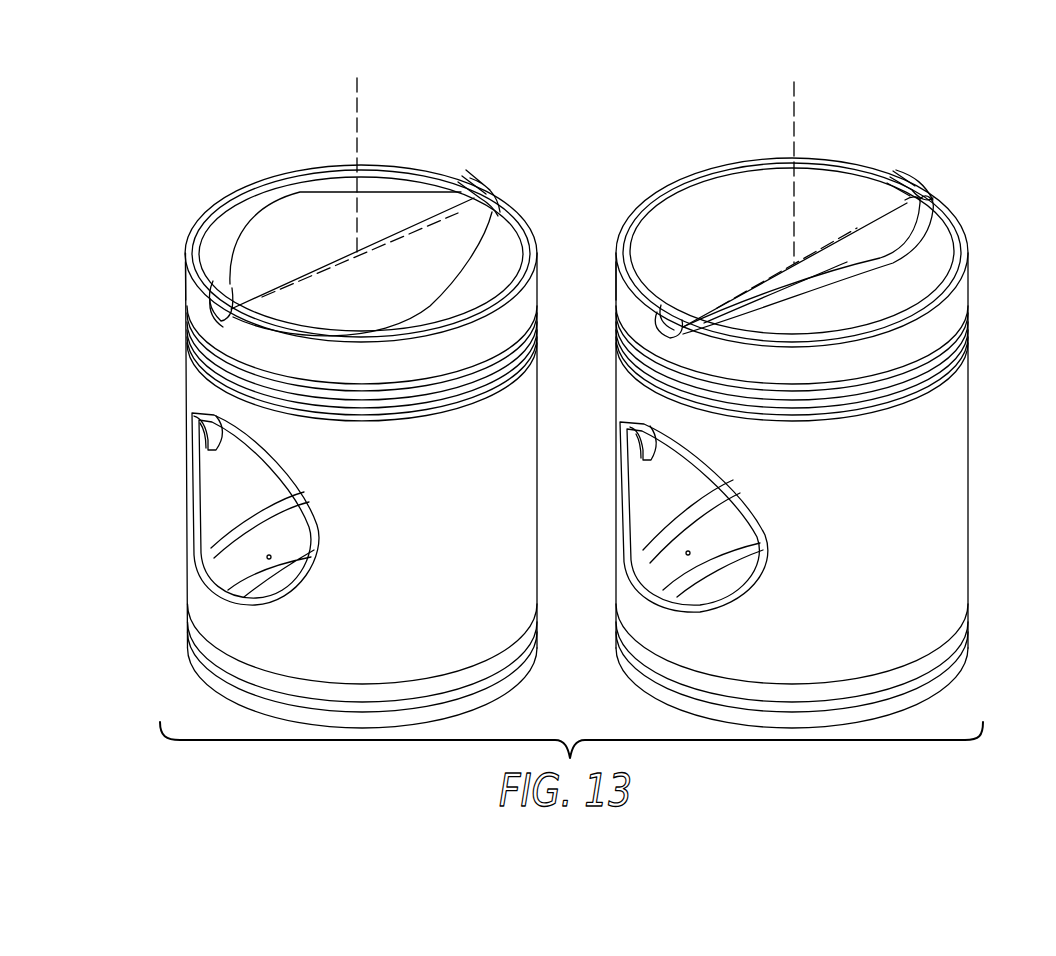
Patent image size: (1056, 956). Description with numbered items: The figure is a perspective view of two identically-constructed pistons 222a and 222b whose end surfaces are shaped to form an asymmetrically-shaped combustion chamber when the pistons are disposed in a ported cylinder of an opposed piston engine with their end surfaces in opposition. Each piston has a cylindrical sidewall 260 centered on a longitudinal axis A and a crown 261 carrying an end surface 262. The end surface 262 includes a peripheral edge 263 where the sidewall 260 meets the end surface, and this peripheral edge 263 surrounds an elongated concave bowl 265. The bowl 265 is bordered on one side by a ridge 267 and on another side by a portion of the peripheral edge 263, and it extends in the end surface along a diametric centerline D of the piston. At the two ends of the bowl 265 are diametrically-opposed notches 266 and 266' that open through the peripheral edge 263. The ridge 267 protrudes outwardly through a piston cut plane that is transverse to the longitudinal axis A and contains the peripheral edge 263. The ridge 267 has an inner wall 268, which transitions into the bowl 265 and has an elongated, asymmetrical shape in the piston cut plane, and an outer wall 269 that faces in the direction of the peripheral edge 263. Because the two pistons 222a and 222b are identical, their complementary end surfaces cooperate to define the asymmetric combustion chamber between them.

The piston 222a is at (166, 266).
The piston 222b is at (990, 268).
The cylindrical sidewall 260 is at (186, 398).
The crown 261 is at (186, 272).
The end surface 262 is at (263, 166).
The peripheral edge 263 is at (537, 246).
The elongated concave bowl 265 is at (413, 253).
The notch 266 is at (336, 255).
The notch 266' is at (754, 273).
The ridge 267 is at (232, 245).
The inner wall 268 is at (293, 225).
The outer wall 269 is at (240, 200).
The longitudinal axis A is at (357, 100).
The diametric centerline D is at (390, 248).